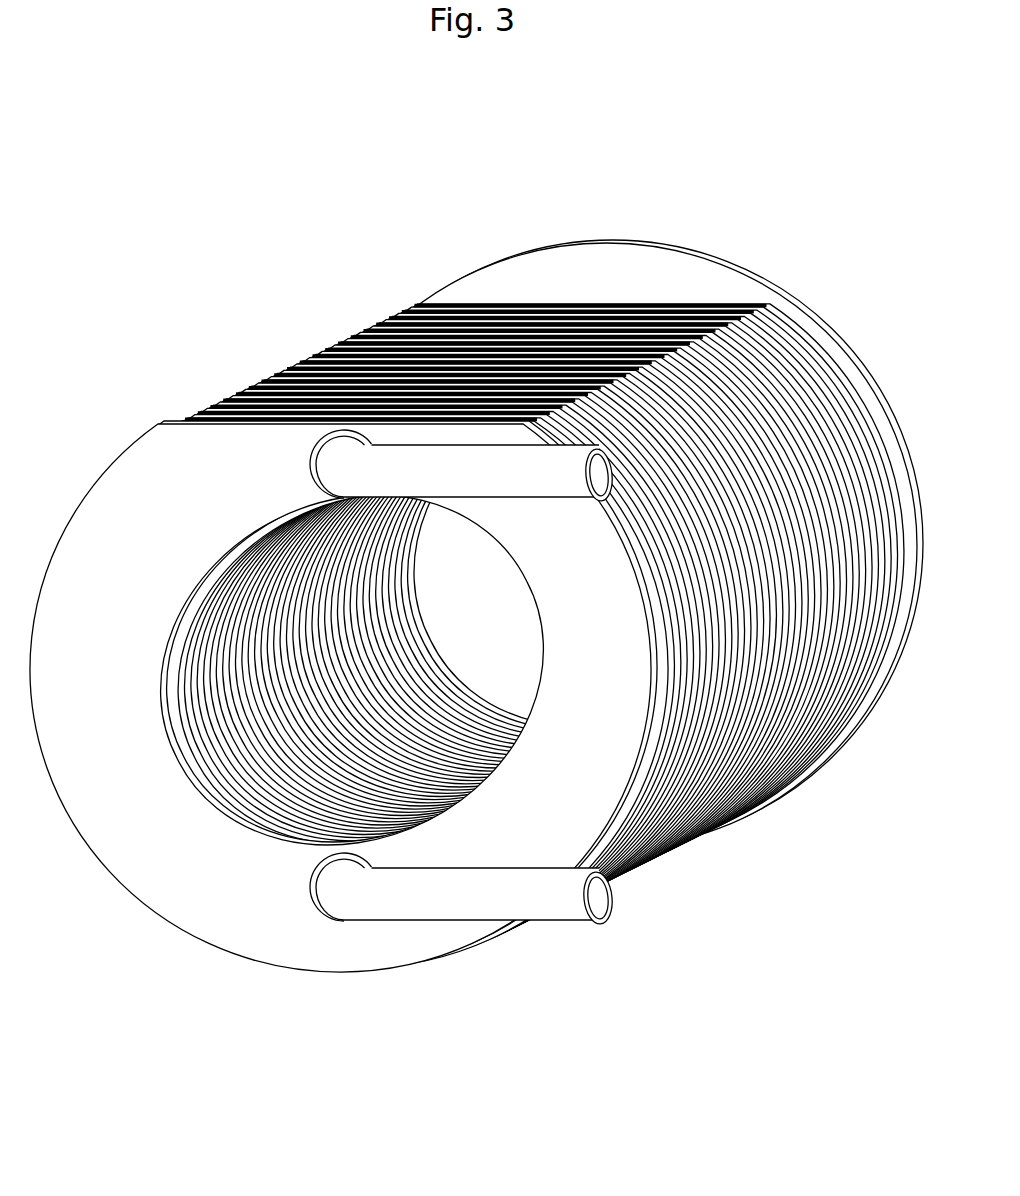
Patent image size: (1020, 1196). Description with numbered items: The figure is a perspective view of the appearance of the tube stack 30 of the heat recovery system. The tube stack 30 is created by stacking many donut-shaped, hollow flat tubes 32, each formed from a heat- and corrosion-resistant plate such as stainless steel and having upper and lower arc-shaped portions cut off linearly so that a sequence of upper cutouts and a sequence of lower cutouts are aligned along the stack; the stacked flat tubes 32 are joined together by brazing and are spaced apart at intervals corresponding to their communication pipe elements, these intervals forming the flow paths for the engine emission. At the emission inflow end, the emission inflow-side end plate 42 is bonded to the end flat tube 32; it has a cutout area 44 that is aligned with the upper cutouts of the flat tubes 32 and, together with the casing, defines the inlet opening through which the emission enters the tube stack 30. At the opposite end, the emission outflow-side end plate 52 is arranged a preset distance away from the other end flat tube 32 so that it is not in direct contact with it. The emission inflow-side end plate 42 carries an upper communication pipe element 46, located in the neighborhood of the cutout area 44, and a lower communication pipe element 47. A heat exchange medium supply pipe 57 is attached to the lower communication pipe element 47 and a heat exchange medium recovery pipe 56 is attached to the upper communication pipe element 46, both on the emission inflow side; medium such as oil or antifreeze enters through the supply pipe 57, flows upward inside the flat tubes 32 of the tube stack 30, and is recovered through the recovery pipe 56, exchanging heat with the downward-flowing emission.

The tube stack 30 is at (358, 270).
The flat tube 32 is at (267, 378).
The emission inflow-side end plate 42 is at (120, 507).
The cutout area 44 is at (233, 392).
The upper communication pipe element 46 is at (307, 455).
The lower communication pipe element 47 is at (310, 892).
The emission outflow-side end plate 52 is at (653, 262).
The heat exchange medium recovery pipe 56 is at (342, 341).
The heat exchange medium supply pipe 57 is at (396, 950).